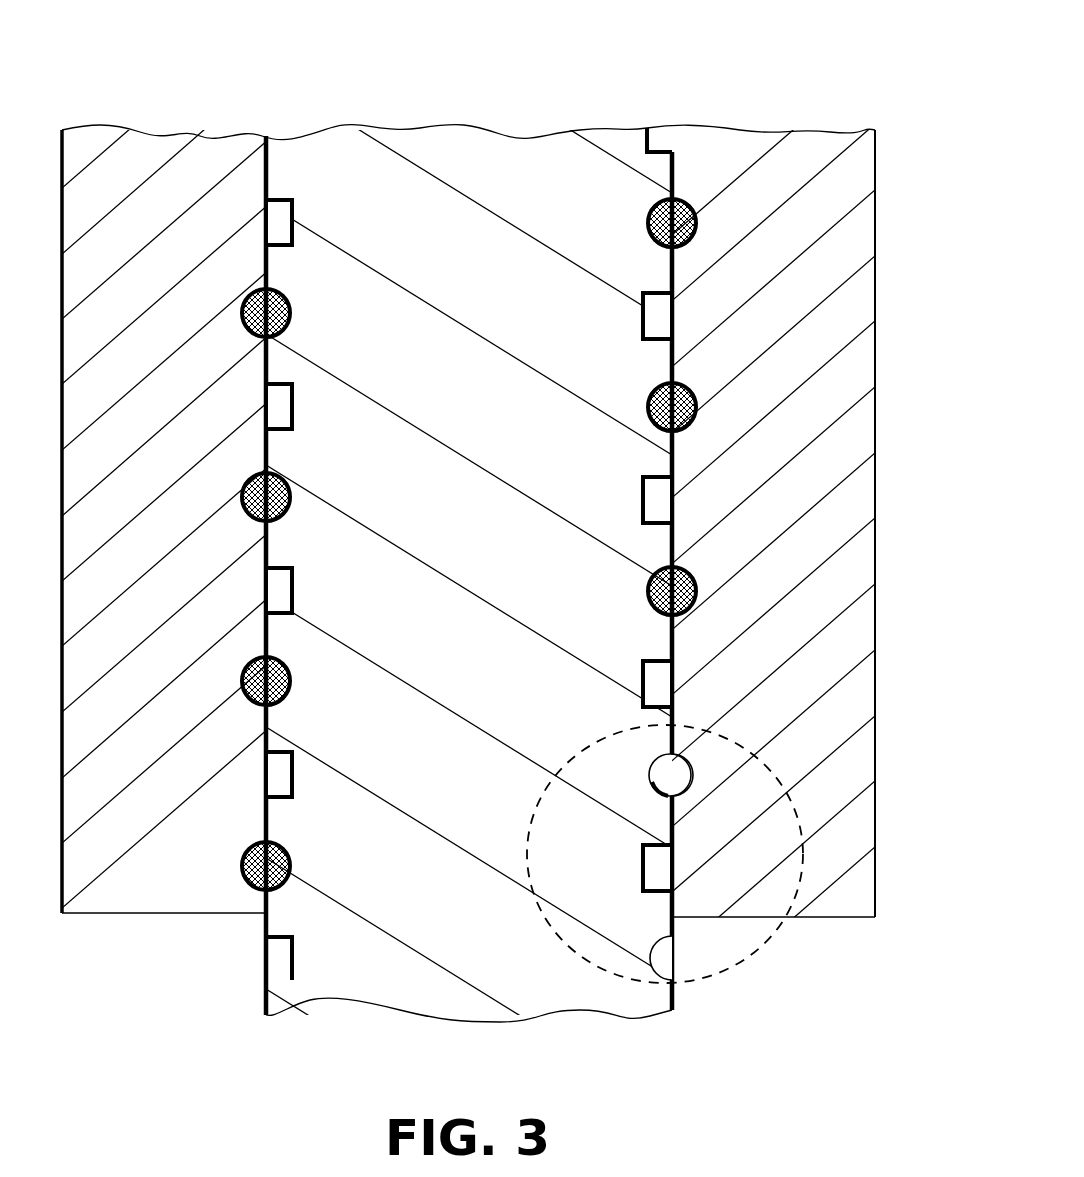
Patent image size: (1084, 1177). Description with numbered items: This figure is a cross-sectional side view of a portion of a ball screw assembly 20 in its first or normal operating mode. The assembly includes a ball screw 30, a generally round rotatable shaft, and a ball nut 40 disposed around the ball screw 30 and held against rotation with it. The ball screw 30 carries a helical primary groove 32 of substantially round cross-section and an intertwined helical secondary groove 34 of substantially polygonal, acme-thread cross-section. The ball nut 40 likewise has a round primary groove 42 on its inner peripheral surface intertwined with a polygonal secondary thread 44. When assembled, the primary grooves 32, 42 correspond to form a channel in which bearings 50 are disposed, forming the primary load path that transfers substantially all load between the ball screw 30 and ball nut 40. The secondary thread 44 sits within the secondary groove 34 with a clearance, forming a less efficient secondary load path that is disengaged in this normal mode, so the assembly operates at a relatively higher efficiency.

The ball screw assembly 20 is at (502, 588).
The ball screw 30 is at (478, 588).
The ball nut 40 is at (793, 554).
The bearing 50 is at (660, 590).
The primary groove 32 is at (656, 770).
The primary groove 42 is at (682, 776).
The secondary thread 44 is at (657, 870).
The secondary groove 34 is at (650, 885).